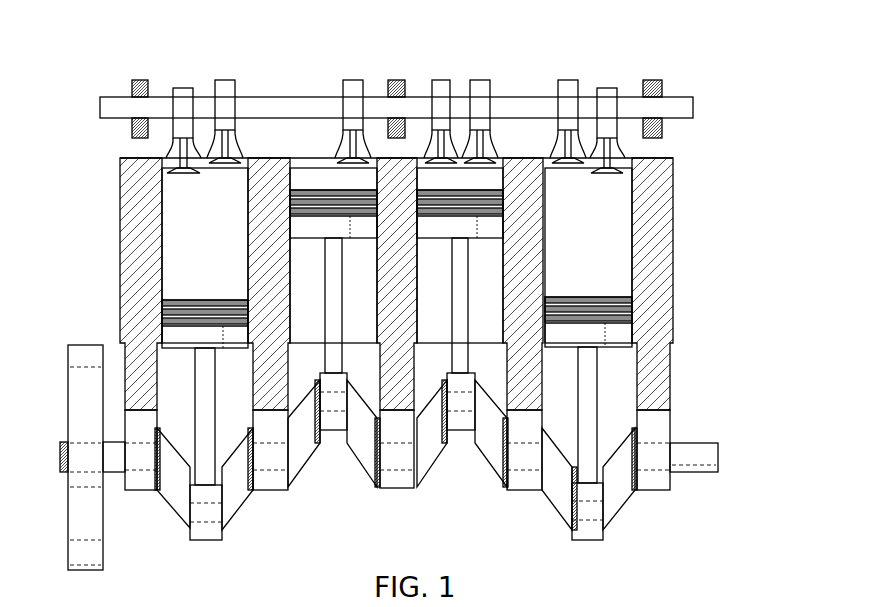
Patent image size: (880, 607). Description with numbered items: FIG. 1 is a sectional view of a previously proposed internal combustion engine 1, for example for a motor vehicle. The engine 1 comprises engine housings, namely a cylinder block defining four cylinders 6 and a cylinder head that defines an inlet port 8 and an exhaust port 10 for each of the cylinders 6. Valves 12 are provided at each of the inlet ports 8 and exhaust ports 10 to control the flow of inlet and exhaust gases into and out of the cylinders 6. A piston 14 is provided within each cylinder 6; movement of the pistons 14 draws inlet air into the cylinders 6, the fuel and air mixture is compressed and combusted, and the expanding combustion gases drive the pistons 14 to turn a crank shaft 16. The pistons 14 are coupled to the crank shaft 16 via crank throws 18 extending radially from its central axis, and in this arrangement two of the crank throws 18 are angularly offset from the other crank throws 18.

The engine 1 is at (93, 82).
The cylinder 6 is at (298, 258).
The inlet port 8 is at (180, 164).
The exhaust port 10 is at (242, 158).
The valve 12 is at (200, 135).
The piston 14 is at (343, 232).
The crank shaft 16 is at (695, 472).
The crank throw 18 is at (242, 503).